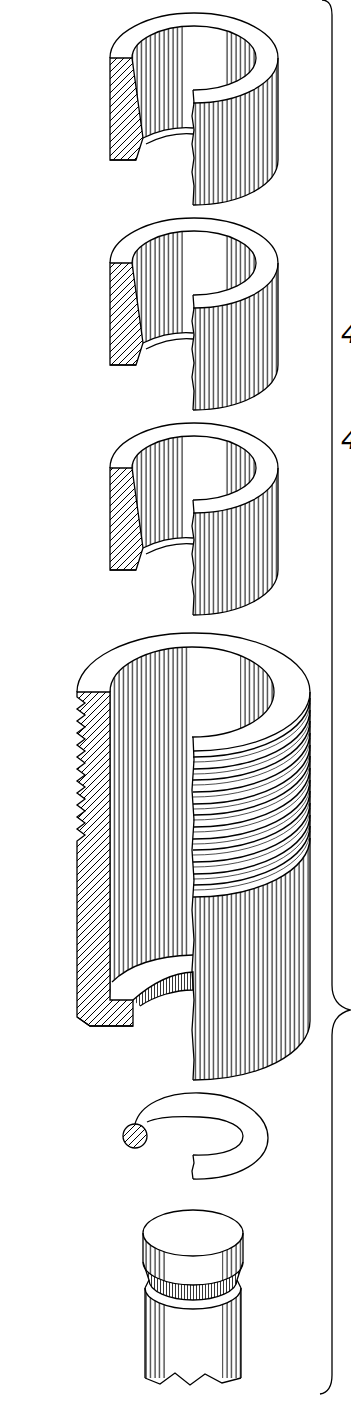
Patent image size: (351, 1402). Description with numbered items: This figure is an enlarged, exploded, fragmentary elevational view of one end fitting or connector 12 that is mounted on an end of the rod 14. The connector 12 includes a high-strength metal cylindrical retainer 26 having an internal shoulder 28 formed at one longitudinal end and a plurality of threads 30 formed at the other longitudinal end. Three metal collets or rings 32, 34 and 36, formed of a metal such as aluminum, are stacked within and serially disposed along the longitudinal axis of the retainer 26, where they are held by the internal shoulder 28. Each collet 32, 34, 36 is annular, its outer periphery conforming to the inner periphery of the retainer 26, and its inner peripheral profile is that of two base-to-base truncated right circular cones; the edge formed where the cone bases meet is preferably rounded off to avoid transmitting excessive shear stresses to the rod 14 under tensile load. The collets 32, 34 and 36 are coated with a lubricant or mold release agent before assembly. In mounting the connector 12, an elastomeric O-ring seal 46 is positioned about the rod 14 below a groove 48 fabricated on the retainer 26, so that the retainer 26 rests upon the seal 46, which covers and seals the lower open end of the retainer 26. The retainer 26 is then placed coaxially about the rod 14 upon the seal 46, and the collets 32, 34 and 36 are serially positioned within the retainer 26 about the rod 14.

The end fitting or connector 12 is at (290, 1206).
The rod 14 is at (145, 1297).
The cylindrical retainer 26 is at (182, 861).
The internal shoulder 28 is at (142, 1002).
The threads 30 is at (77, 730).
The collet or ring 32 is at (192, 516).
The collet or ring 34 is at (190, 311).
The collet or ring 36 is at (192, 103).
The O-ring seal 46 is at (131, 1113).
The groove 48 is at (128, 1028).